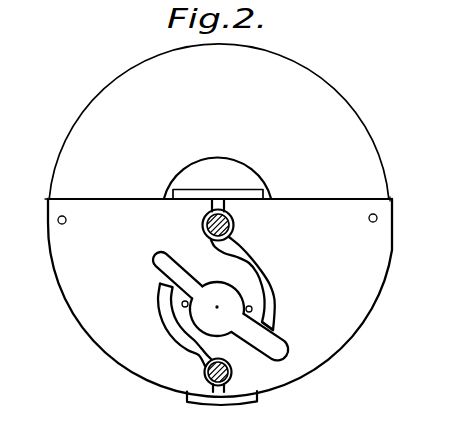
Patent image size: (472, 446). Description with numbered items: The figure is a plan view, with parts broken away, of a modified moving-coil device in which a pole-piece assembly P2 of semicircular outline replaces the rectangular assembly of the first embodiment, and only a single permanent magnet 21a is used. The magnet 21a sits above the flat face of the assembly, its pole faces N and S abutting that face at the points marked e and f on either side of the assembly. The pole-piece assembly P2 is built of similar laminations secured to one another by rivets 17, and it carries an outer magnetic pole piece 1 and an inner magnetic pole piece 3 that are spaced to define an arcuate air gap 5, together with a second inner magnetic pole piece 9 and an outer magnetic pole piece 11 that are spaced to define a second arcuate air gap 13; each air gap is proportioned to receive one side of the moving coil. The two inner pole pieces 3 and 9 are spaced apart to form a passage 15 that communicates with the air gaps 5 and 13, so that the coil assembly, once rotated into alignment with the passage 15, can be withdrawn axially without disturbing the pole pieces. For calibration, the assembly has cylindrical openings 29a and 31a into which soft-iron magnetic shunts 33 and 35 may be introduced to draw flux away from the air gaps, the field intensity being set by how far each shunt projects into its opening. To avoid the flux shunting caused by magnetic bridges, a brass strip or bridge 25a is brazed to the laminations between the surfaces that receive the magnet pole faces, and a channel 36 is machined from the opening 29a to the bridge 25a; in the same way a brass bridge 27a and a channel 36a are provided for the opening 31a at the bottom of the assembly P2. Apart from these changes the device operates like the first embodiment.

The outer magnetic pole piece 1 is at (271, 277).
The inner magnetic pole piece 3 is at (260, 318).
The arcuate air gap 5 is at (275, 323).
The inner magnetic pole piece 9 is at (190, 304).
The outer magnetic pole piece 11 is at (160, 333).
The second arcuate air gap 13 is at (158, 301).
The passage 15 is at (187, 283).
The rivets 17 is at (66, 223).
The permanent magnet 21a is at (126, 72).
The brass strip or bridge 25a is at (249, 182).
The brass bridge 27a is at (221, 400).
The opening 29a is at (202, 225).
The opening 31a is at (205, 373).
The magnetic shunt 33 is at (234, 225).
The magnetic shunt 35 is at (232, 372).
The channel 36 is at (211, 206).
The channel 36a is at (188, 390).
The pole-piece assembly P2 is at (104, 347).
The pole face N is at (113, 192).
The pole face S is at (339, 192).
The end point e is at (46, 199).
The end point f is at (389, 190).